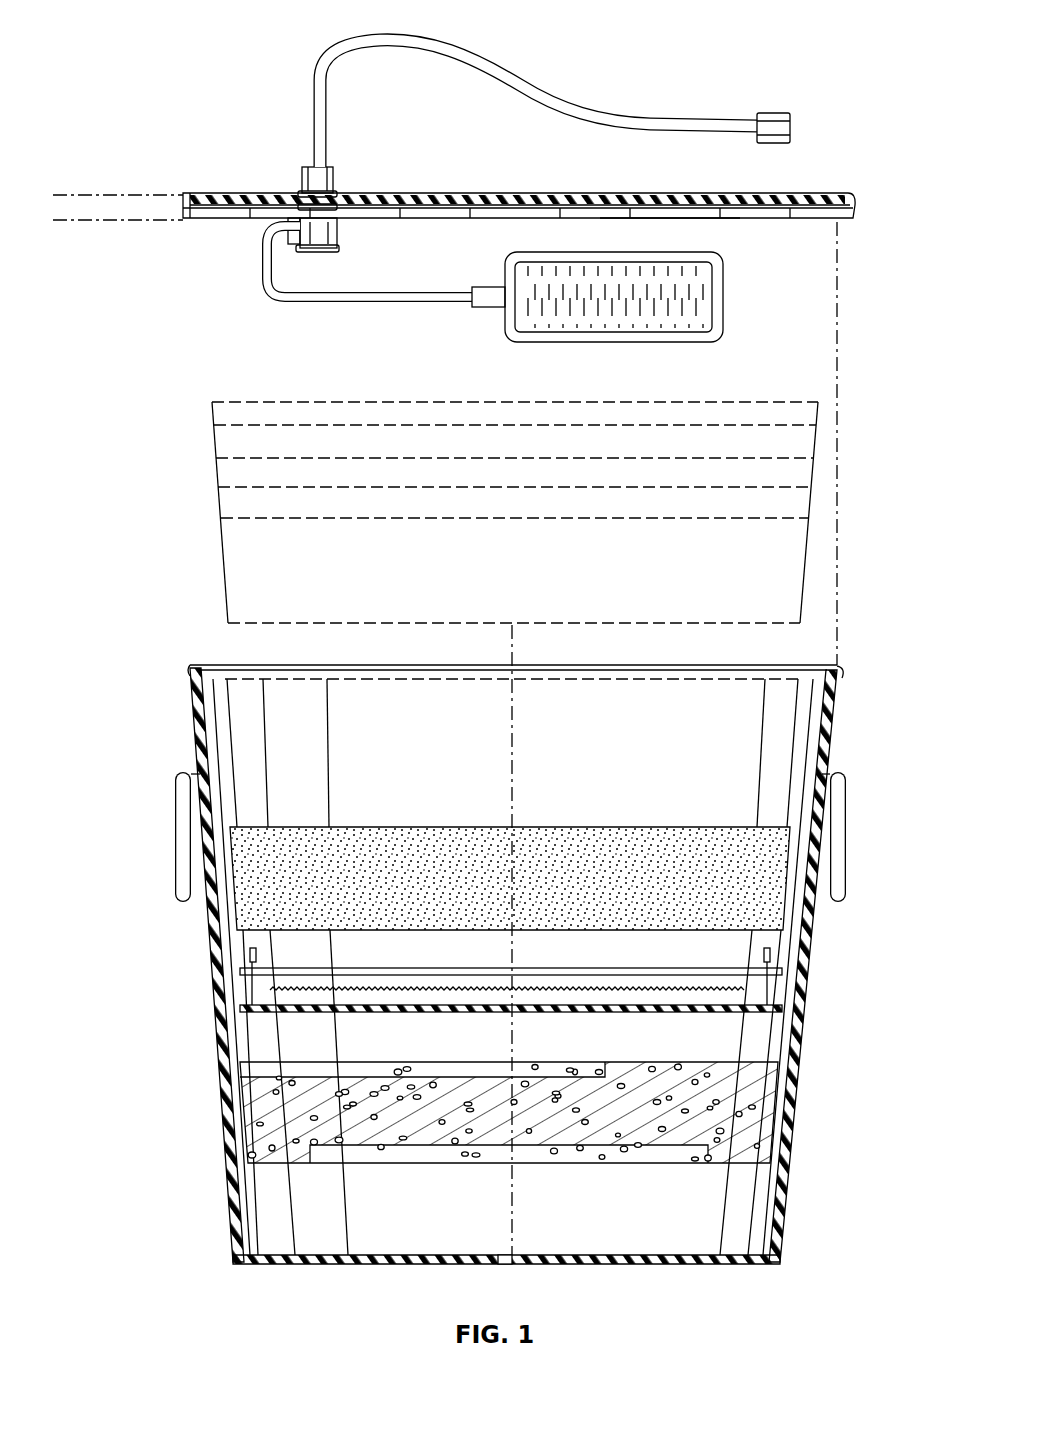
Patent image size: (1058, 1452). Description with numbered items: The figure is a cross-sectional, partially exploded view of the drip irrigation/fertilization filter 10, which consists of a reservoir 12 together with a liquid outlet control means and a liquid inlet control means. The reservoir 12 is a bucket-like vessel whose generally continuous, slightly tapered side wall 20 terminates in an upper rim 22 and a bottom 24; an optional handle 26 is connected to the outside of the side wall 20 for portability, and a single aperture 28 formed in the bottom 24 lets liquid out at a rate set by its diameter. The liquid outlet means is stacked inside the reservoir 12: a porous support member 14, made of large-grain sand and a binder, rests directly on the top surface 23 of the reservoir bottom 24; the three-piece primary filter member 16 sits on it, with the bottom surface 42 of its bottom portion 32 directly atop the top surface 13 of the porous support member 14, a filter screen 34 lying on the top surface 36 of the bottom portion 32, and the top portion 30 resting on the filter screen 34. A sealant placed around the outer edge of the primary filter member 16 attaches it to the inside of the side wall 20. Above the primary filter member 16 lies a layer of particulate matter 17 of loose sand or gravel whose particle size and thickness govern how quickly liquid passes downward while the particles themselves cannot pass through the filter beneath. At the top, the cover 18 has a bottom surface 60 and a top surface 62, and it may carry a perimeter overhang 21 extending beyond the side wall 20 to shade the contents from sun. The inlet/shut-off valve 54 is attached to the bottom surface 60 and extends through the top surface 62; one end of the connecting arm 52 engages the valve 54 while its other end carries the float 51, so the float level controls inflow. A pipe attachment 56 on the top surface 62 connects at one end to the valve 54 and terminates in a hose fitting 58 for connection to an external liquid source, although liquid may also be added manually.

The drip irrigation/fertilization filter 10 is at (175, 30).
The reservoir 12 is at (515, 971).
The top surface of porous support member 13 is at (476, 1121).
The porous support member 14 is at (445, 1172).
The primary filter member 16 is at (461, 991).
The layer of particulate matter 17 is at (580, 827).
The cover 18 is at (868, 192).
The side wall 20 is at (195, 720).
The perimeter overhang 21 is at (165, 222).
The upper rim 22 is at (840, 666).
The top surface of reservoir bottom 23 is at (578, 1254).
The bottom 24 is at (762, 1264).
The handle 26 is at (177, 832).
The aperture 28 is at (502, 1264).
The top portion 30 is at (240, 970).
The bottom portion 32 is at (450, 1012).
The filter screen 34 is at (490, 988).
The top surface of bottom portion 36 is at (245, 1006).
The bottom surface of bottom portion 42 is at (593, 1012).
The float 51 is at (520, 342).
The connecting arm 52 is at (303, 302).
The inlet/shut-off valve 54 is at (337, 230).
The pipe attachment 56 is at (410, 38).
The hose fitting 58 is at (780, 113).
The bottom surface of cover 60 is at (733, 222).
The top surface of cover 62 is at (475, 195).